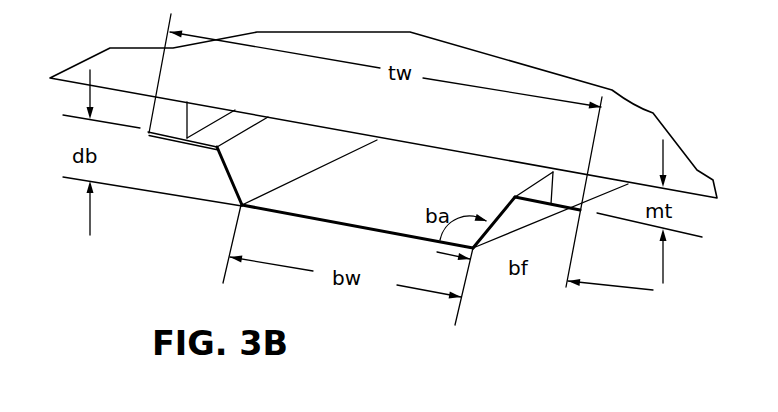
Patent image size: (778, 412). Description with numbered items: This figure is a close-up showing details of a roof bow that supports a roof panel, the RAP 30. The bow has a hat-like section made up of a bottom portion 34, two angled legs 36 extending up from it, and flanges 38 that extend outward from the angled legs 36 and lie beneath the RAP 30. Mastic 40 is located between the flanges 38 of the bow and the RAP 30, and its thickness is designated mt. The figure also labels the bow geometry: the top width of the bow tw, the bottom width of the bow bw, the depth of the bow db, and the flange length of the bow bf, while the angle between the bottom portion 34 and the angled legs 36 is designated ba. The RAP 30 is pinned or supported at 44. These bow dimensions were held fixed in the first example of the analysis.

The RAP 30 is at (482, 65).
The bottom portion 34 is at (328, 221).
The angled legs 36 is at (524, 212).
The flanges 38 is at (200, 143).
The mastic 40 is at (170, 115).
The support 44 is at (568, 189).